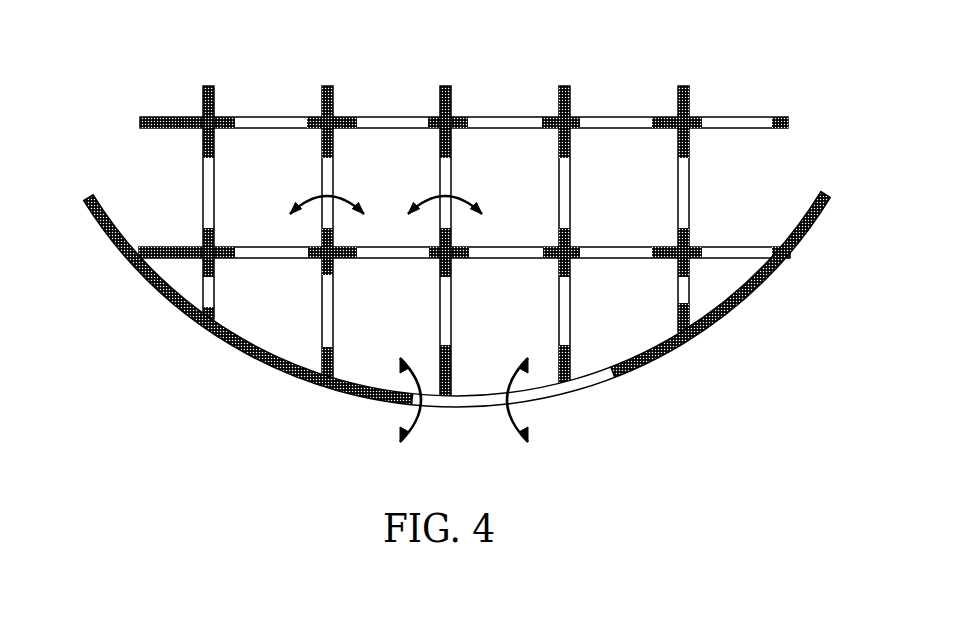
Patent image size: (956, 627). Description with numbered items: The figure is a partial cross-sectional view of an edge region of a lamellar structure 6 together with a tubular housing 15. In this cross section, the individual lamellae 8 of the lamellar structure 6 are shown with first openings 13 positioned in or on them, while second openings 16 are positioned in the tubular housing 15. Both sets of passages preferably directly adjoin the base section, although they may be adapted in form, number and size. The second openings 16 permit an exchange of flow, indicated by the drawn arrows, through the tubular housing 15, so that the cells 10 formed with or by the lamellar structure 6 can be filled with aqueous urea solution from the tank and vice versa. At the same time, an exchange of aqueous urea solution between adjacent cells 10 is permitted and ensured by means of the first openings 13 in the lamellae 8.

The lamellar structure 6 is at (447, 238).
The lamellae 8 is at (345, 116).
The first openings 13 is at (505, 116).
The cells 10 is at (447, 309).
The tubular housing 15 is at (705, 330).
The second openings 16 is at (588, 384).